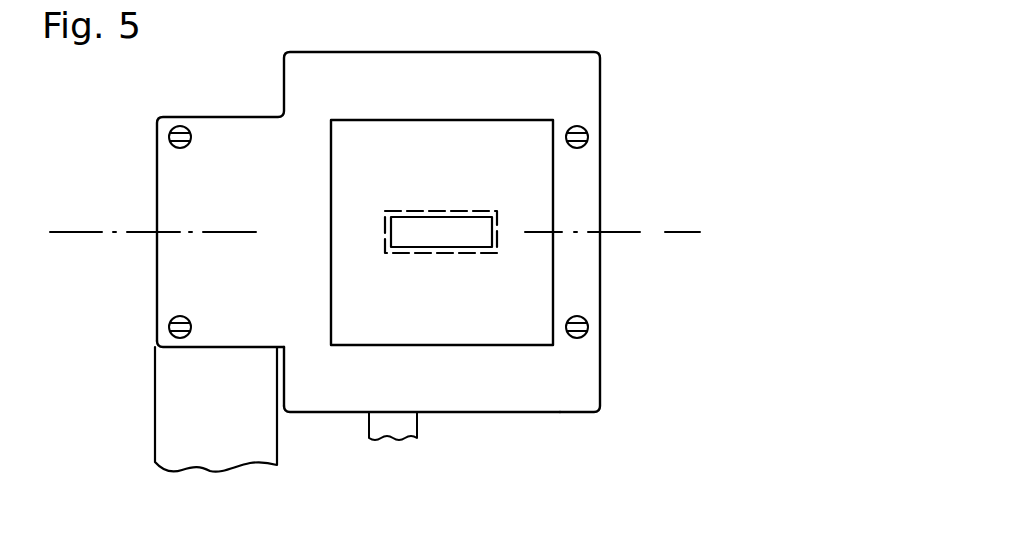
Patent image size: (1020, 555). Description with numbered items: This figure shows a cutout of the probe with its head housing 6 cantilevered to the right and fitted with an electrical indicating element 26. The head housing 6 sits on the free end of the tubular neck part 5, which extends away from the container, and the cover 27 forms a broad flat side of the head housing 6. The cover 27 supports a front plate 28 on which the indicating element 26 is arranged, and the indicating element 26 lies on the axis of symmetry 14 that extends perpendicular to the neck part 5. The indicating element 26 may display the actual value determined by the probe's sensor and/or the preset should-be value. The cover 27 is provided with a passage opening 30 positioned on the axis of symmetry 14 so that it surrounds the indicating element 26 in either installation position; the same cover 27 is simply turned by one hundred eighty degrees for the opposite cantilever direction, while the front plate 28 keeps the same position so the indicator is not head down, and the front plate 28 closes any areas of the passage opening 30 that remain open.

The neck part 5 is at (207, 440).
The head housing 6 is at (603, 107).
The axis of symmetry 14 is at (672, 232).
The indicating element 26 is at (495, 224).
The cover 27 is at (500, 389).
The front plate 28 is at (532, 162).
The passage opening 30 is at (497, 250).